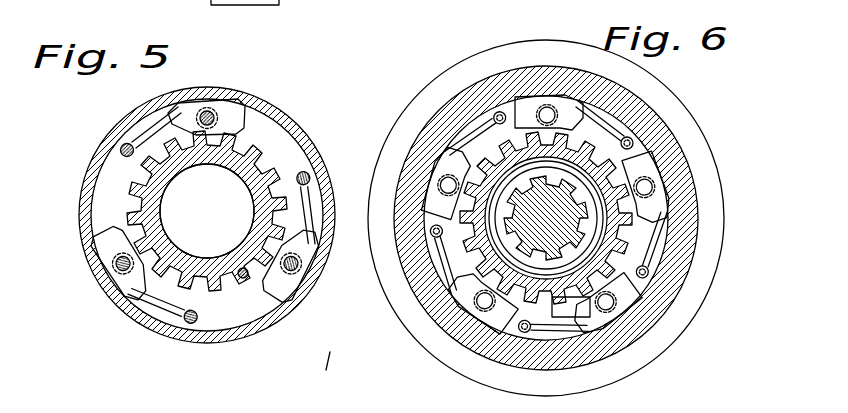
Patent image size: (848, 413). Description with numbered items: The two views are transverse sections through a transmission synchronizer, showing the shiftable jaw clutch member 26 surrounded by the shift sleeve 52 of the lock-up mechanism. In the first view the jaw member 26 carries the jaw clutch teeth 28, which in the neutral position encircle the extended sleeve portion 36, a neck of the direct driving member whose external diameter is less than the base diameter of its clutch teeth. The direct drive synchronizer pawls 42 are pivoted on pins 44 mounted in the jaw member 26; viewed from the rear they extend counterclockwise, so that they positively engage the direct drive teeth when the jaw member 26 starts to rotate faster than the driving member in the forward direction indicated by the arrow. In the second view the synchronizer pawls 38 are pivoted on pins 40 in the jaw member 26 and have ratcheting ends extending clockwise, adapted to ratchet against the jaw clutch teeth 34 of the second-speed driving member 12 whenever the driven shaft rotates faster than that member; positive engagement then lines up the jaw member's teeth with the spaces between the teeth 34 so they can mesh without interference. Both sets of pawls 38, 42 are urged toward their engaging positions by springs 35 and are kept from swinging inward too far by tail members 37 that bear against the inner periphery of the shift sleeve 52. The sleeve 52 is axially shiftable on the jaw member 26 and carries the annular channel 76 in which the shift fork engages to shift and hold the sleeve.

In FIG. 6, the second-speed driving member 12 is at (507, 203).
In FIG. 5, the shiftable jaw clutch member 26 is at (243, 280).
In FIG. 6, the shiftable jaw clutch member 26 is at (442, 273).
In FIG. 5, the jaw clutch teeth 28 is at (125, 208).
In FIG. 6, the jaw clutch teeth 34 is at (627, 247).
In FIG. 5, the springs 35 is at (306, 168).
In FIG. 6, the springs 35 is at (483, 150).
In FIG. 5, the extended sleeve portion 36 is at (233, 168).
In FIG. 6, the extended sleeve portion 36 is at (587, 216).
In FIG. 5, the tail members 37 is at (243, 110).
In FIG. 6, the tail members 37 is at (515, 100).
In FIG. 6, the synchronizer pawls 38 is at (590, 137).
In FIG. 6, the pins 40 is at (547, 105).
In FIG. 5, the direct drive synchronizer pawls 42 is at (143, 278).
In FIG. 5, the pins 44 is at (108, 267).
In FIG. 5, the shift sleeve 52 is at (95, 164).
In FIG. 6, the shift sleeve 52 is at (672, 153).
In FIG. 6, the annular channel 76 is at (677, 110).